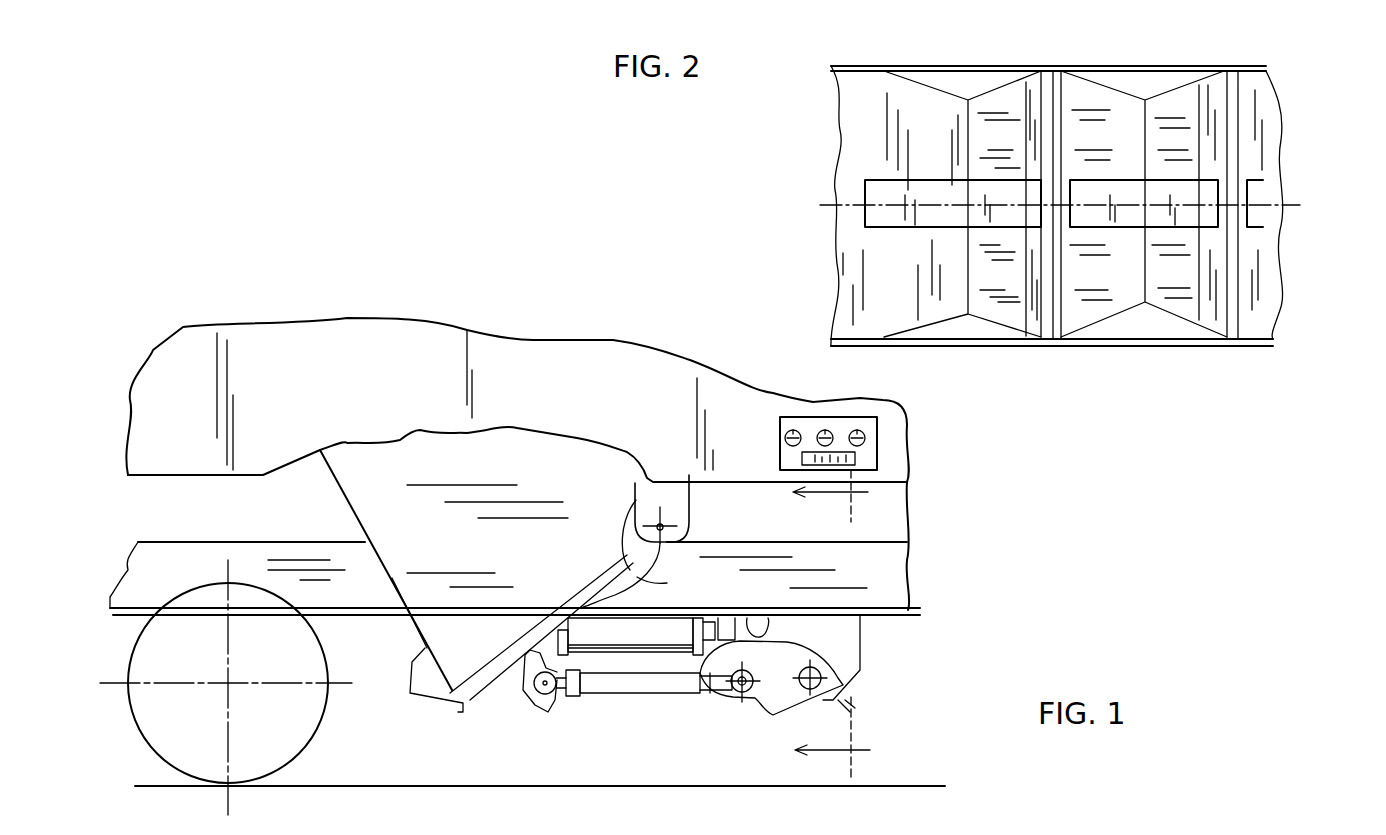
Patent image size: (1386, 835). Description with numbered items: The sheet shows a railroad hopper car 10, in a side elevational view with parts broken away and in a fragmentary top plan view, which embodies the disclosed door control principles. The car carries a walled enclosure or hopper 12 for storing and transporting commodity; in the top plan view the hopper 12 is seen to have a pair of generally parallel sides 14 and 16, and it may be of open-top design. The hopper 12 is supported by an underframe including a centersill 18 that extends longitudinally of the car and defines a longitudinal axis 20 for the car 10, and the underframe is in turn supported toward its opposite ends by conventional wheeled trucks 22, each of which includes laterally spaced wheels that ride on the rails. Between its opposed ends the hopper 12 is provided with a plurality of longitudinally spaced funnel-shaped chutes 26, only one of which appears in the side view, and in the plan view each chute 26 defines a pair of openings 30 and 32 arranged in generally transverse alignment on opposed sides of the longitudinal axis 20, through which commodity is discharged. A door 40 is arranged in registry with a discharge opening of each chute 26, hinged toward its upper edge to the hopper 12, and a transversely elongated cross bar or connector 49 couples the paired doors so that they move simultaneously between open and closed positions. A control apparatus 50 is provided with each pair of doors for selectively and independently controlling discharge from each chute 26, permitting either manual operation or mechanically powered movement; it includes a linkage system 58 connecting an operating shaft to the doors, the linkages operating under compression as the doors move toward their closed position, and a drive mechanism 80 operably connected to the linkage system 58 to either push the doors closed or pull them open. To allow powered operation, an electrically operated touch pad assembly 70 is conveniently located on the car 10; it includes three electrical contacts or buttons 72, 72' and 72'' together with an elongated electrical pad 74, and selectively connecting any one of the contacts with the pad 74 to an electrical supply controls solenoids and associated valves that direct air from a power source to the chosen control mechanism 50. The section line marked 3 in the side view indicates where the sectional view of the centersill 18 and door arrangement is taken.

In FIG. 1, the section line 3- 3 is at (832, 627).
In FIG. 2, the railroad hopper car 10 is at (1156, 50).
In FIG. 1, the railroad hopper car 10 is at (381, 301).
In FIG. 1, the hopper 12 is at (710, 359).
In FIG. 2, the side 14 is at (1039, 348).
In FIG. 2, the side 16 is at (986, 64).
In FIG. 2, the centersill 18 is at (927, 220).
In FIG. 1, the centersill 18 is at (900, 562).
In FIG. 2, the longitudinal axis 20 is at (1288, 198).
In FIG. 1, the wheeled truck 22 is at (329, 727).
In FIG. 2, the funnel-shaped chute 26 is at (1224, 70).
In FIG. 1, the funnel-shaped chute 26 is at (507, 447).
In FIG. 2, the opening 30 is at (993, 310).
In FIG. 2, the opening 32 is at (972, 88).
In FIG. 1, the door 40 is at (490, 706).
In FIG. 1, the cross bar 49 is at (508, 698).
In FIG. 1, the control apparatus 50 is at (742, 708).
In FIG. 1, the linkage system 58 is at (690, 705).
In FIG. 1, the touch pad assembly 70 is at (888, 454).
In FIG. 1, the electrical contact 72 is at (763, 433).
In FIG. 1, the electrical contact 72' is at (810, 397).
In FIG. 1, the electrical contact 72'' is at (933, 431).
In FIG. 1, the electrical pad 74 is at (857, 459).
In FIG. 1, the drive mechanism 80 is at (640, 663).